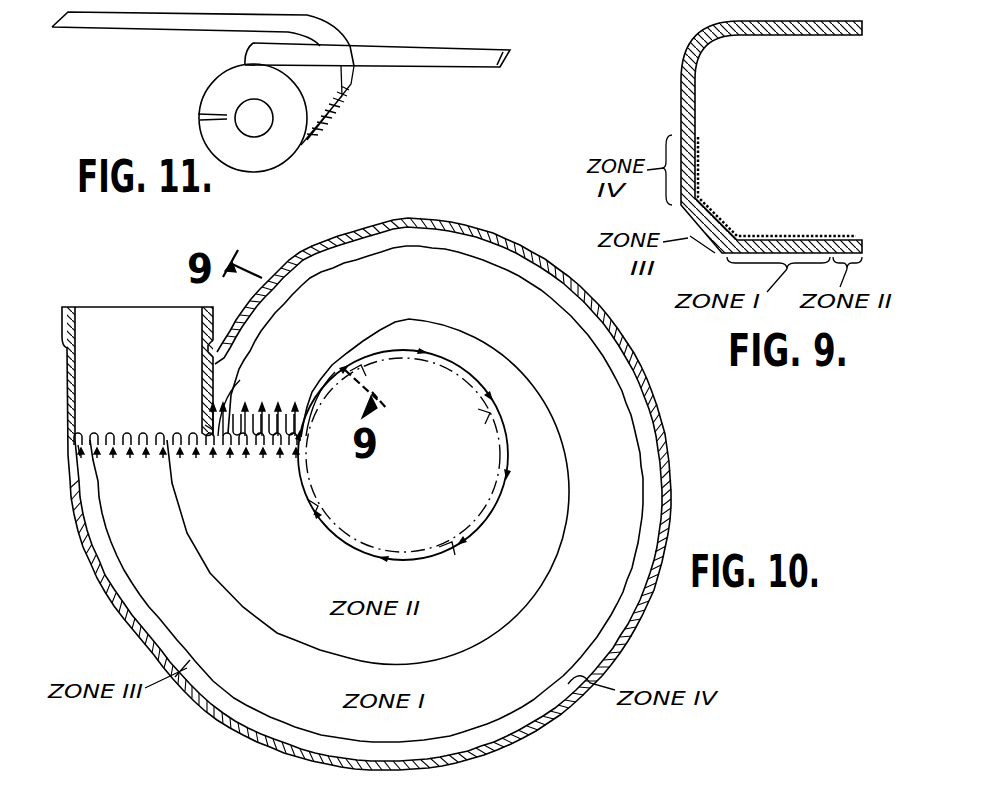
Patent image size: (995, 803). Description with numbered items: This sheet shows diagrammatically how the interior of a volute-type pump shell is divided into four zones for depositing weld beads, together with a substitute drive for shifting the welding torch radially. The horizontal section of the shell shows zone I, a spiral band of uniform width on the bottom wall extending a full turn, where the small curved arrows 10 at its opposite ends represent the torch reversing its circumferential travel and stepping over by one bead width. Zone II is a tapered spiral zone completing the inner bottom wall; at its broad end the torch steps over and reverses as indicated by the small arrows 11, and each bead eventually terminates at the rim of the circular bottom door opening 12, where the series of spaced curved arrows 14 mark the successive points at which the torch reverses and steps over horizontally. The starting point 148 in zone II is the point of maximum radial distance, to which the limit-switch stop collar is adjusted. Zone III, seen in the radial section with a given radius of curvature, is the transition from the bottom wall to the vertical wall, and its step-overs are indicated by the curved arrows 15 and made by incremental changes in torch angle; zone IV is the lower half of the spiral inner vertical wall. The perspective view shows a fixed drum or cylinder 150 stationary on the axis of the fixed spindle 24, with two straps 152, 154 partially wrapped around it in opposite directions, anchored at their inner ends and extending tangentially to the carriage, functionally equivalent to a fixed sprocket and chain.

In FIG. 9, the small curved arrows 10 is at (653, 135).
In FIG. 10, the small curved arrows 10 is at (260, 407).
In FIG. 10, the small arrows 11 is at (270, 447).
In FIG. 9, the circular bottom door opening 12 is at (862, 240).
In FIG. 10, the circular bottom door opening 12 is at (323, 533).
In FIG. 10, the series of spaced curved arrows 14 is at (478, 526).
In FIG. 10, the curved arrows 15 is at (83, 453).
In FIG. 10, the starting point 148 is at (173, 453).
In FIG. 11, the strap 152 is at (160, 29).
In FIG. 11, the strap 154 is at (428, 60).
In FIG. 11, the fixed drum or cylinder 150 is at (323, 100).
In FIG. 11, the fixed spindle 24 is at (260, 118).